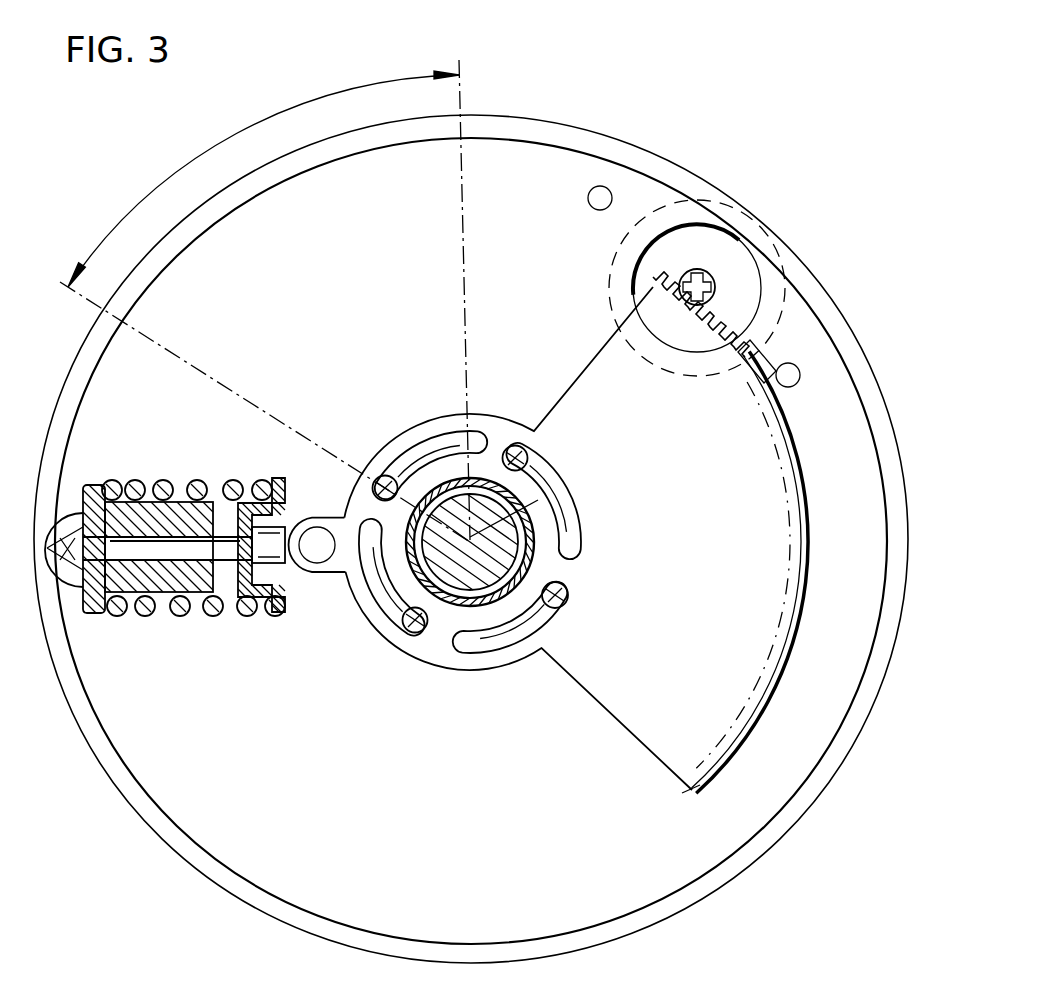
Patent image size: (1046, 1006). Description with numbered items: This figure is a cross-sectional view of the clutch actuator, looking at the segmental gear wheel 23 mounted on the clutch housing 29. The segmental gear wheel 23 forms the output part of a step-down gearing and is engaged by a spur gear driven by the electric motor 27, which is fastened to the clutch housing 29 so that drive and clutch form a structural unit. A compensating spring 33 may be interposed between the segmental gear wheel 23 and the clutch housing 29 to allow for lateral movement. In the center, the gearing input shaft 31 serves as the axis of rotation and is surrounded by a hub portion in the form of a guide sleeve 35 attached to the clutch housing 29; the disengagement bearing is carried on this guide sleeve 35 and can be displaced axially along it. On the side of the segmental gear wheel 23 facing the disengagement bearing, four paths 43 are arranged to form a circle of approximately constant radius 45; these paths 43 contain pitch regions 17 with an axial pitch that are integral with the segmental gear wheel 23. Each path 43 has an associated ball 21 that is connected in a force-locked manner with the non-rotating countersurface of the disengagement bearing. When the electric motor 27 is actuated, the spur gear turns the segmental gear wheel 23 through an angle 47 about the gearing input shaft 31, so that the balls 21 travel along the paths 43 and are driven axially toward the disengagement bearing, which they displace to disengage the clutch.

The pitch regions 17 is at (571, 505).
The ball 21 is at (556, 610).
The segmental gear wheel 23 is at (673, 735).
The electric motor 27 is at (713, 206).
The clutch housing 29 is at (578, 142).
The gearing input shaft 31 is at (463, 567).
The compensating spring 33 is at (238, 565).
The guide sleeve 35 is at (489, 487).
The paths 43 is at (493, 640).
The radius 45 is at (537, 501).
The angle 47 is at (262, 122).